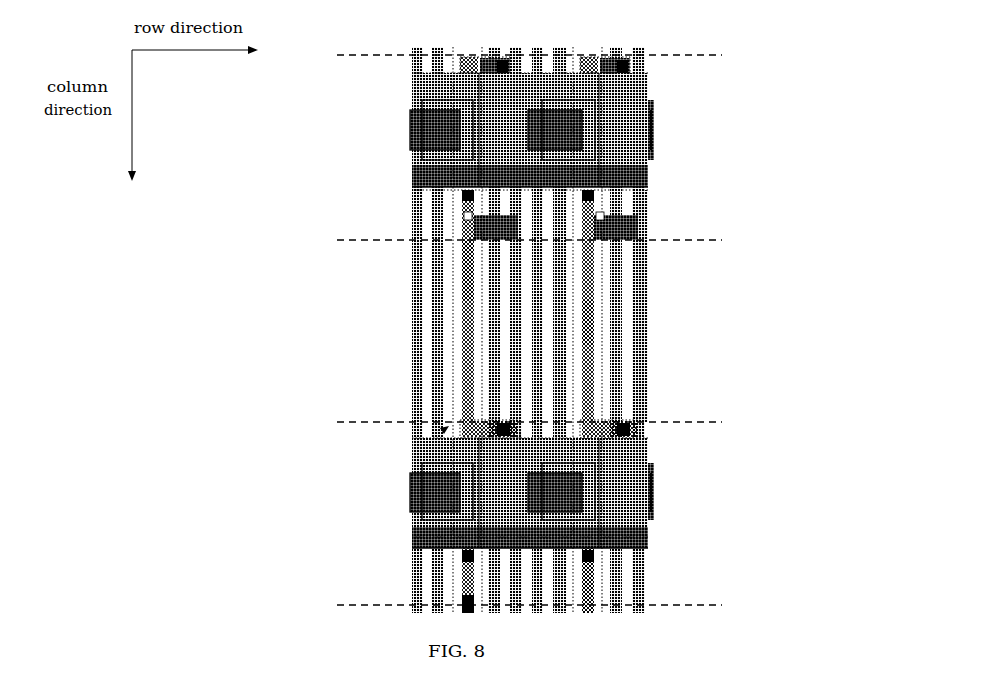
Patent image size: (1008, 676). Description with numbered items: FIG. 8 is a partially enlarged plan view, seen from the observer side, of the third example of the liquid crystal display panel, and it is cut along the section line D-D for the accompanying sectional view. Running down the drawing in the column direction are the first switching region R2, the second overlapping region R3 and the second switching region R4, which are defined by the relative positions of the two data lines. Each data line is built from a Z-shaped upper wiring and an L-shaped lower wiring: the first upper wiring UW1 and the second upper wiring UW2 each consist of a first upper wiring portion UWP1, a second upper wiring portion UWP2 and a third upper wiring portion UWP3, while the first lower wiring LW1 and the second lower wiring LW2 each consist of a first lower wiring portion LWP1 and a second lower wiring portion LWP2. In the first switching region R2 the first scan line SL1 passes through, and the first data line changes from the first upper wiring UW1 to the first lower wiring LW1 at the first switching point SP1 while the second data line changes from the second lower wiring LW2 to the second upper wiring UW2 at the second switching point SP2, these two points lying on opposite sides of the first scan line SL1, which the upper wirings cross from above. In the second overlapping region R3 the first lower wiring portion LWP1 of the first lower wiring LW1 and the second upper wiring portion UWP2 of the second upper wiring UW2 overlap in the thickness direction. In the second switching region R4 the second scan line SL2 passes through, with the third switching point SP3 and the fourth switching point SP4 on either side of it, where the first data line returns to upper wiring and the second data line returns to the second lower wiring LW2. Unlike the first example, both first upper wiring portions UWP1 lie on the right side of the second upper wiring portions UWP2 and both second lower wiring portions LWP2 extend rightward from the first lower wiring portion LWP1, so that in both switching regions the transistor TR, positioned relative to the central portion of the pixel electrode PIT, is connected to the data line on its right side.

The first upper wiring portion UWP1 is at (526, 349).
The second upper wiring portion UWP2 is at (536, 206).
The third upper wiring portion UWP3 is at (518, 379).
The first upper wiring UW1 is at (434, 123).
The second upper wiring UW2 is at (678, 306).
The first lower wiring portion LWP1 is at (532, 426).
The second lower wiring portion LWP2 is at (511, 258).
The first lower wiring LW1 is at (383, 306).
The second lower wiring LW2 is at (613, 570).
The first switching region R2 is at (529, 147).
The second overlapping region R3 is at (529, 362).
The second switching region R4 is at (529, 550).
The first switching point SP1 is at (475, 179).
The second switching point SP2 is at (580, 70).
The third switching point SP3 is at (480, 533).
The fourth switching point SP4 is at (594, 407).
The first scan line SL1 is at (734, 130).
The second scan line SL2 is at (736, 491).
The pixel electrode PIT is at (722, 306).
The transistor TR is at (568, 469).
The D-D section line D-D is at (442, 473).